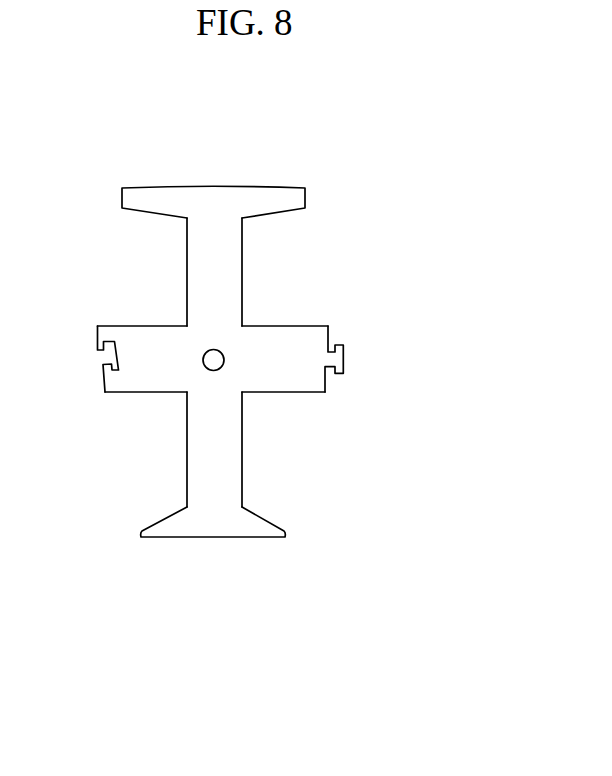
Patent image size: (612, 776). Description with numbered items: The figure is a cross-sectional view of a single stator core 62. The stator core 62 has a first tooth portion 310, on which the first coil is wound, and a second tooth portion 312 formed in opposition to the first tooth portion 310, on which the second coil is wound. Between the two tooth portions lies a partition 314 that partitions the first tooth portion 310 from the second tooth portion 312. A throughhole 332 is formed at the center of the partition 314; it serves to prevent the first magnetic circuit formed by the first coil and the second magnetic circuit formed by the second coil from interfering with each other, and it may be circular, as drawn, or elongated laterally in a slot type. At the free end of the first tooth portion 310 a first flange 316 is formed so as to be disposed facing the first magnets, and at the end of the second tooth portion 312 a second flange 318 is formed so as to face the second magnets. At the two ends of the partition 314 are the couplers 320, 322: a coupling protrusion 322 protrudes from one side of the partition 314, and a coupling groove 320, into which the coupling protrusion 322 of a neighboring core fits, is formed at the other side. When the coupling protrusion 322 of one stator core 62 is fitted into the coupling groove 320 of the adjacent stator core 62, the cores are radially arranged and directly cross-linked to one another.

The stator core 62 is at (309, 163).
The first tooth portion 310 is at (229, 460).
The second tooth portion 312 is at (232, 253).
The partition 314 is at (153, 380).
The first flange 316 is at (235, 530).
The second flange 318 is at (227, 188).
The coupling groove 320 is at (113, 370).
The coupling protrusion 322 is at (335, 353).
The throughhole 332 is at (225, 362).